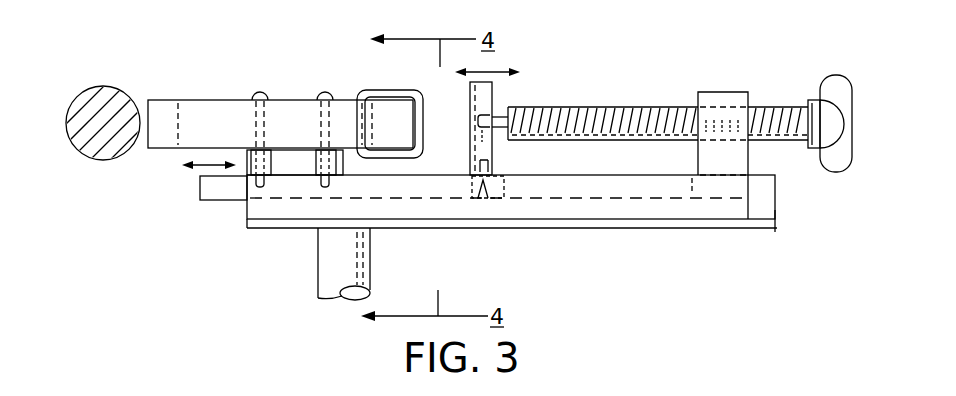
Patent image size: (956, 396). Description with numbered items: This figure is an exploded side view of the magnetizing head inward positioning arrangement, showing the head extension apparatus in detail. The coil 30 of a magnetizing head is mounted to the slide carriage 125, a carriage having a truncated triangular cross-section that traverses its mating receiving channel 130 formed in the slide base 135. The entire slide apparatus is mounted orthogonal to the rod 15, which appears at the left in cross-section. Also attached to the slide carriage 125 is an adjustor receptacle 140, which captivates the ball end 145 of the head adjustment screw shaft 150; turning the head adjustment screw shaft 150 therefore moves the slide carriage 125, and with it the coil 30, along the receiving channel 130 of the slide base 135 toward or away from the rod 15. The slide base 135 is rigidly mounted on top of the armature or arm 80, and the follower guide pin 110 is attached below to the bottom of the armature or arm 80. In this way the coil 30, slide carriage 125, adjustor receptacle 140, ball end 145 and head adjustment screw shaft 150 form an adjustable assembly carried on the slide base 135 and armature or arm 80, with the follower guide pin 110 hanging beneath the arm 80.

The rod 15 is at (106, 160).
The coil 30 is at (227, 134).
The armature or arm 80 is at (612, 228).
The follower guide pin 110 is at (330, 265).
The slide carriage 125 is at (191, 219).
The receiving channel 130 is at (725, 183).
The slide base 135 is at (418, 210).
The adjustor receptacle 140 is at (483, 100).
The ball end 145 is at (492, 145).
The head adjustment screw shaft 150 is at (655, 108).